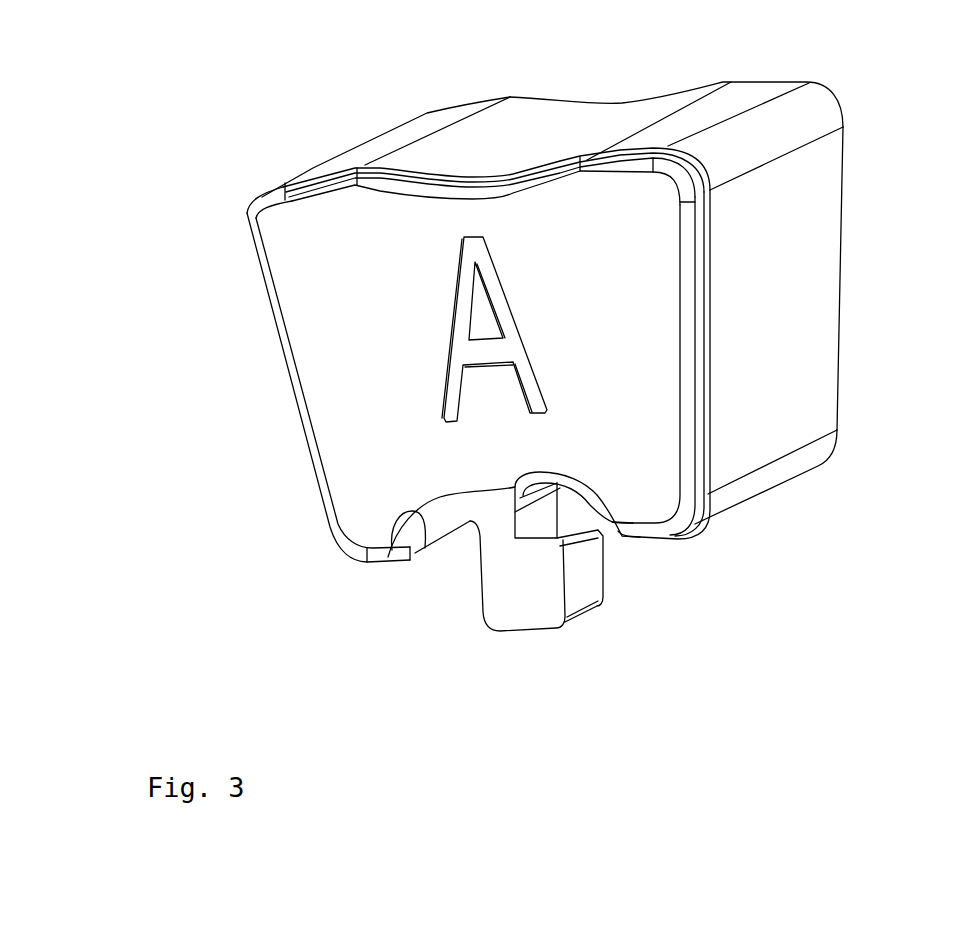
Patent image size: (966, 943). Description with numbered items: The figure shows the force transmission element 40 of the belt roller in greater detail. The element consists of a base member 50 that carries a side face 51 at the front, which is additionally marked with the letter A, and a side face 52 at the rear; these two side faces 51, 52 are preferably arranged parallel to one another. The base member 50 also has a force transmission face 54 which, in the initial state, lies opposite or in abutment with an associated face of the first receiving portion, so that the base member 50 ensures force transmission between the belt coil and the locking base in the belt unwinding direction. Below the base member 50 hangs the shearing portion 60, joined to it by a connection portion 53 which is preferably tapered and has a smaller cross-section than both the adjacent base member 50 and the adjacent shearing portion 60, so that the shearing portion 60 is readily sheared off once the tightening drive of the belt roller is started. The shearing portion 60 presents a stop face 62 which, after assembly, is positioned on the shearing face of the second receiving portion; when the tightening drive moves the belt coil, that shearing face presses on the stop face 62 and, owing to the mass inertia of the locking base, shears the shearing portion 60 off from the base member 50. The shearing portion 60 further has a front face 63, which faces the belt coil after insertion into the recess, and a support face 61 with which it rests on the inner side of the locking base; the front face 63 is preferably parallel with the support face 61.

The force transmission element 40 is at (232, 138).
The base member 50 is at (388, 392).
The side face 51 is at (290, 260).
The side face 52 is at (843, 155).
The connection portion 53 is at (535, 513).
The force transmission face 54 is at (280, 345).
The shearing portion 60 is at (470, 546).
The support face 61 is at (603, 568).
The stop face 62 is at (578, 584).
The front face 63 is at (520, 584).